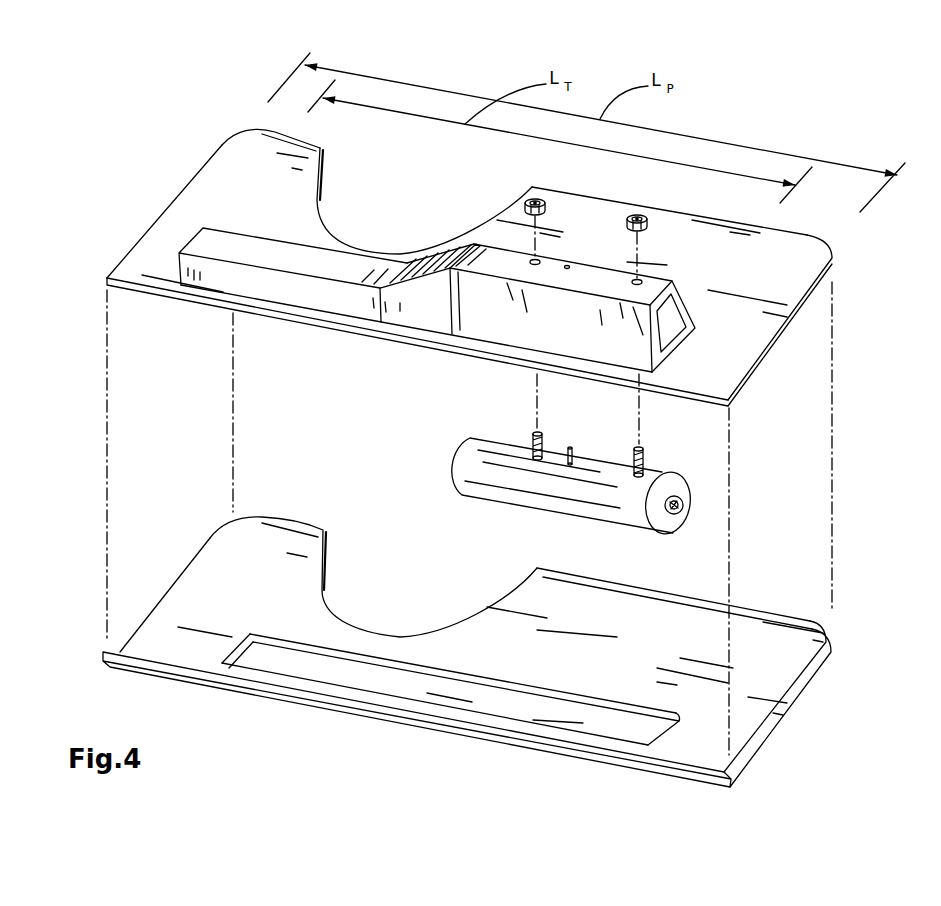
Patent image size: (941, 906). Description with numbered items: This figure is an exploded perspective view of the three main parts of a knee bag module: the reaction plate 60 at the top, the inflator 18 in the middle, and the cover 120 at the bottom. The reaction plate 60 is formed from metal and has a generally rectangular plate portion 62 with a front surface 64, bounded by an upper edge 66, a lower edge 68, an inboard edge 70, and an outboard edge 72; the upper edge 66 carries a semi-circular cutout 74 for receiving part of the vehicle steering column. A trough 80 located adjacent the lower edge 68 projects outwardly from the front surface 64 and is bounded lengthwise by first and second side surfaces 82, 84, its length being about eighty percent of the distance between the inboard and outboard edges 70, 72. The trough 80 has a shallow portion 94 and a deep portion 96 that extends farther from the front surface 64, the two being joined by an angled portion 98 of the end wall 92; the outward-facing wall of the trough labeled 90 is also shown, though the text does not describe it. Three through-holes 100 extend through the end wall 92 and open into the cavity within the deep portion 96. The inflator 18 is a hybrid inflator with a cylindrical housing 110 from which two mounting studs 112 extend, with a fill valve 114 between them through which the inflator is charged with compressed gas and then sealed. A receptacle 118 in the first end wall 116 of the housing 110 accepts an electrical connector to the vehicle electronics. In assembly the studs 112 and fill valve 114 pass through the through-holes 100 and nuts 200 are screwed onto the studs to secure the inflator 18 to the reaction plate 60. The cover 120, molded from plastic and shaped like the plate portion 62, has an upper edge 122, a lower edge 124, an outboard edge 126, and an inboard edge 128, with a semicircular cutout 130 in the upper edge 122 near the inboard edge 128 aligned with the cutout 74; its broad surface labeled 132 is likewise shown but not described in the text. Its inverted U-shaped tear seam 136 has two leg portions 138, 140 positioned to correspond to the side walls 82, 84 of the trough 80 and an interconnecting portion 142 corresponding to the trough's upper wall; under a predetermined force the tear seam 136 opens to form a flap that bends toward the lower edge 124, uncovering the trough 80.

The inflator 18 is at (510, 495).
The reaction plate 60 is at (768, 272).
The plate portion 62 is at (235, 182).
The front surface 64 is at (280, 212).
The upper edge 66 is at (688, 212).
The lower edge 68 is at (350, 333).
The inboard edge 70 is at (178, 195).
The outboard edge 72 is at (798, 318).
The semi-circular cutout 74 is at (320, 175).
The trough 80 is at (488, 313).
The first side surface 82 is at (673, 292).
The second side surface 84 is at (187, 243).
The front face 90 is at (508, 317).
The end wall 92 is at (487, 258).
The shallow portion 94 is at (257, 261).
The deep portion 96 is at (606, 272).
The angled portion 98 is at (427, 265).
The through-holes 100 is at (569, 262).
The cylindrical housing 110 is at (572, 520).
The mounting studs 112 is at (531, 432).
The fill valve 114 is at (570, 447).
The first end wall 116 is at (685, 520).
The receptacle 118 is at (680, 497).
The cover 120 is at (770, 667).
The upper edge 122 is at (743, 606).
The lower edge 124 is at (634, 766).
The outboard edge 126 is at (772, 740).
The inboard edge 128 is at (180, 582).
The semicircular cutout 130 is at (324, 562).
The upper surface 132 is at (583, 626).
The tear seam 136 is at (295, 635).
The leg portion 138 is at (226, 653).
The leg portion 140 is at (680, 730).
The interconnecting portion 142 is at (610, 698).
The nuts 200 is at (533, 199).